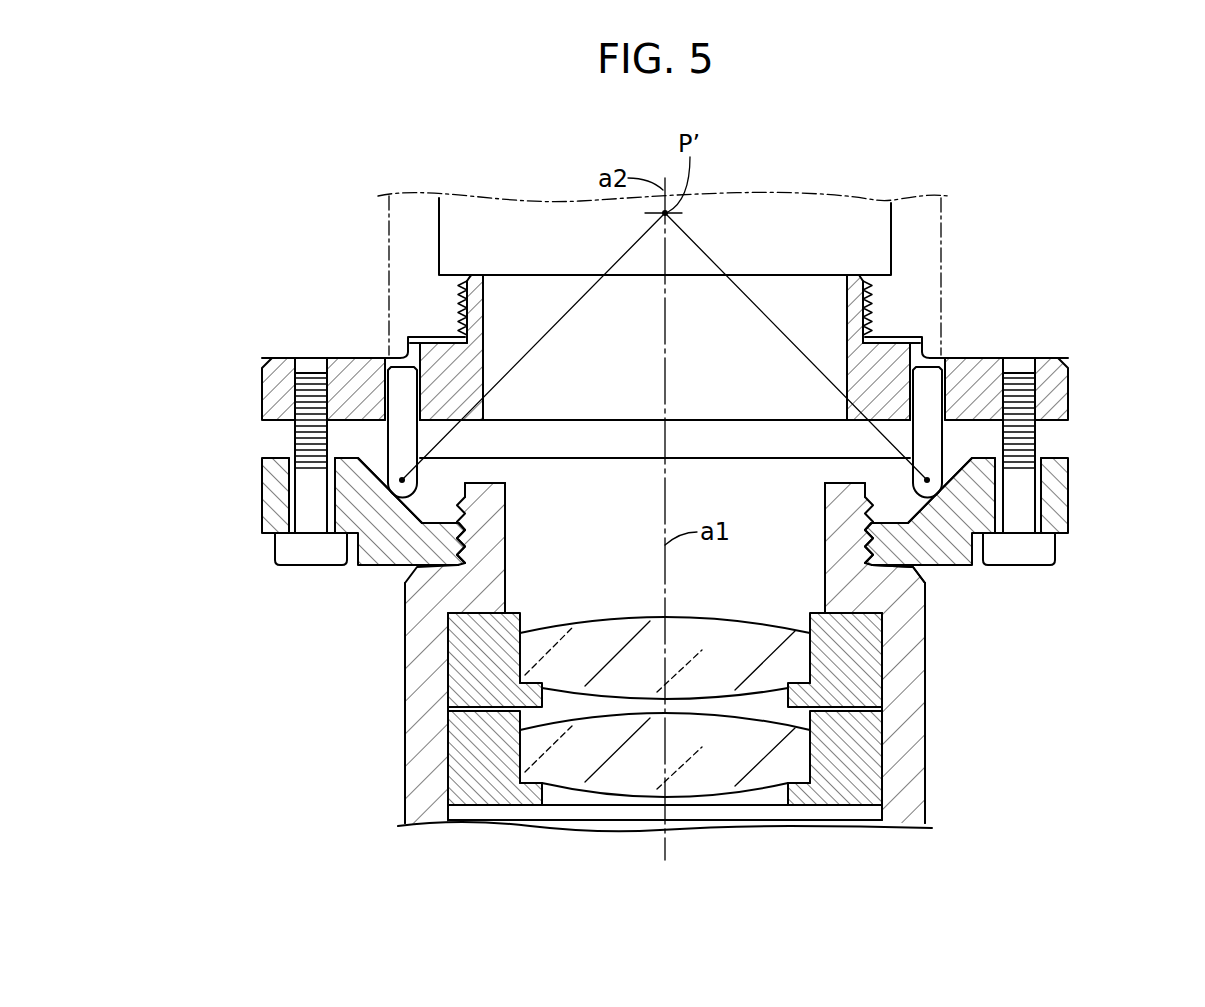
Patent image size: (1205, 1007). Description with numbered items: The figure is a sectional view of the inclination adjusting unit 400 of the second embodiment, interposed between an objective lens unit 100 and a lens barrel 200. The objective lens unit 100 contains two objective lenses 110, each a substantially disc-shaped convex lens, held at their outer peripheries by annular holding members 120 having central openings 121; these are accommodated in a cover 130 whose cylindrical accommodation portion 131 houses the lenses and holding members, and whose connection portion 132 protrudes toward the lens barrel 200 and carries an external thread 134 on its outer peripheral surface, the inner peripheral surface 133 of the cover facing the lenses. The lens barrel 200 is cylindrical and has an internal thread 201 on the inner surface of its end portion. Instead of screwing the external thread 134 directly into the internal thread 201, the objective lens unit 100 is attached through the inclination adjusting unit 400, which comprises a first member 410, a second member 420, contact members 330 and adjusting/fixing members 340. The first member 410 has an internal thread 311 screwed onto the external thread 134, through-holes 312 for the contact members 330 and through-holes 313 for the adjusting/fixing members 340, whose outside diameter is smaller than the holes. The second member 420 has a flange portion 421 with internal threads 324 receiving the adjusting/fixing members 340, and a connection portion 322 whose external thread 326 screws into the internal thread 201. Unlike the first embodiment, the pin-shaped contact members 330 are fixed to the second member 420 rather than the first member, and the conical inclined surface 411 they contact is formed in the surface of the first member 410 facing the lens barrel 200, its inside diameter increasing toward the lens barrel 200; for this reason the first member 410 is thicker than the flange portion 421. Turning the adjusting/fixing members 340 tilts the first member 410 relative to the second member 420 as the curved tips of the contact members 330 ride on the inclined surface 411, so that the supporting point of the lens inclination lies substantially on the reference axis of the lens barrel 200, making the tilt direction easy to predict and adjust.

The objective lens unit 100 is at (775, 603).
The objective lens 110 is at (793, 752).
The holding member 120 is at (855, 668).
The opening 121 is at (880, 811).
The cover 130 is at (749, 599).
The accommodation portion 131 is at (910, 628).
The connection portion 132 is at (873, 545).
The inner surface of barrel 133 is at (823, 530).
The external thread 134 is at (905, 560).
The lens barrel 200 is at (727, 273).
The internal thread 201 is at (840, 297).
The internal thread 311 is at (465, 560).
The through-hole 312 is at (408, 385).
The through-hole 313 is at (292, 487).
The connection portion 322 is at (455, 290).
The internal thread 324 is at (300, 357).
The external thread 326 is at (452, 322).
The contact member 330 is at (397, 442).
The adjusting/fixing member 340 is at (297, 433).
The inclination adjusting unit 400 is at (654, 444).
The first member 410 is at (601, 542).
The inclined surface 411 is at (405, 502).
The second member 420 is at (589, 341).
The flange portion 421 is at (273, 393).